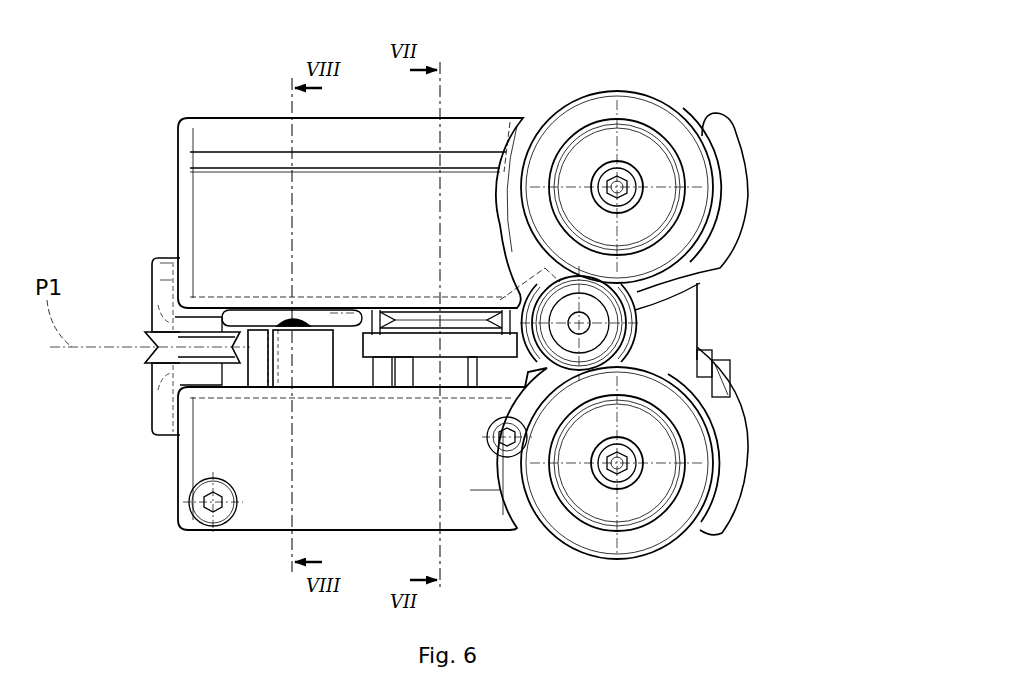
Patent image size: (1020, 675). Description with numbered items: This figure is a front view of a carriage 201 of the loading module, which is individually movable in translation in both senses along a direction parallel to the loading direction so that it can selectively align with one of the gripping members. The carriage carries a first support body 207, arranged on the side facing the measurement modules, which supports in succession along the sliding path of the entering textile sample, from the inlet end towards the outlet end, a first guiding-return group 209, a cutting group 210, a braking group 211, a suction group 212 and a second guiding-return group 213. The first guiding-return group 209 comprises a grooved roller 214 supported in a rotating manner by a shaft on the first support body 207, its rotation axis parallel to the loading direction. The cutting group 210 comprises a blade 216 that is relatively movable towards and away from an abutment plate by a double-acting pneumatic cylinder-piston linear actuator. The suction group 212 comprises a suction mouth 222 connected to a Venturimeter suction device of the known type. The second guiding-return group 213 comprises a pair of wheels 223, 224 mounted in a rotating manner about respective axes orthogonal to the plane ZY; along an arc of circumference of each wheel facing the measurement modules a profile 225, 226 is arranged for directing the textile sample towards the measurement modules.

The carriage 201 is at (121, 172).
The first support body 207 is at (677, 332).
The first guiding-return group 209 is at (146, 374).
The cutting group 210 is at (243, 383).
The braking group 211 is at (456, 306).
The suction group 212 is at (582, 321).
The second guiding-return group 213 is at (681, 95).
The roller 214 is at (149, 331).
The blade 216 is at (274, 386).
The suction mouth 222 is at (612, 283).
The wheel 223 is at (715, 157).
The wheel 224 is at (647, 507).
The profile 225 is at (735, 193).
The profile 226 is at (727, 507).